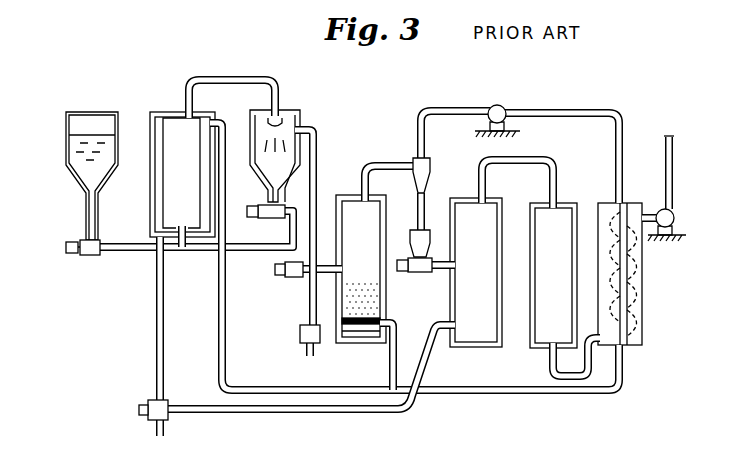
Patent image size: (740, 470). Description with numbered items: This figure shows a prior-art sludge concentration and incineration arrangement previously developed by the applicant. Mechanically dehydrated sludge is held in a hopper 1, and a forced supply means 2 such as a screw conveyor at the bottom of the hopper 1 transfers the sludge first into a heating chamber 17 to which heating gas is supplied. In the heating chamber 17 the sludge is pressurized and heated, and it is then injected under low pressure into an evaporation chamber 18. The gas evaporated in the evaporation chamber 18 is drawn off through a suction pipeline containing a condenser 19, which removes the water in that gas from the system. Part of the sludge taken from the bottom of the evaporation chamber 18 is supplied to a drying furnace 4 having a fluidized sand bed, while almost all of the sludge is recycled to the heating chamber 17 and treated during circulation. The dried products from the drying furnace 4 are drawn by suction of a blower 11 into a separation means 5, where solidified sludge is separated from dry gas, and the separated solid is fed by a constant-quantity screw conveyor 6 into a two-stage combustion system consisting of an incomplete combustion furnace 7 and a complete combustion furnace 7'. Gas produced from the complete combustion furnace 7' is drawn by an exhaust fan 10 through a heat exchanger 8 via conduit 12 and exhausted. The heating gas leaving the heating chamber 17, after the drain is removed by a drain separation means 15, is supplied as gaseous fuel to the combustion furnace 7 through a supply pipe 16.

The hopper 1 is at (105, 122).
The forced supply means 2 is at (86, 256).
The drying furnace 4 is at (346, 193).
The separation means 5 is at (413, 160).
The screw conveyor 6 is at (408, 255).
The incomplete combustion furnace 7 is at (474, 254).
The complete combustion furnace 7' is at (544, 259).
The heat exchanger 8 is at (603, 203).
The exhaust fan 10 is at (658, 208).
The blower 11 is at (504, 108).
The conduit 12 is at (593, 113).
The drain separation means 15 is at (148, 403).
The supply pipe 16 is at (422, 372).
The heating chamber 17 is at (163, 113).
The evaporation chamber 18 is at (292, 112).
The condenser 19 is at (300, 342).